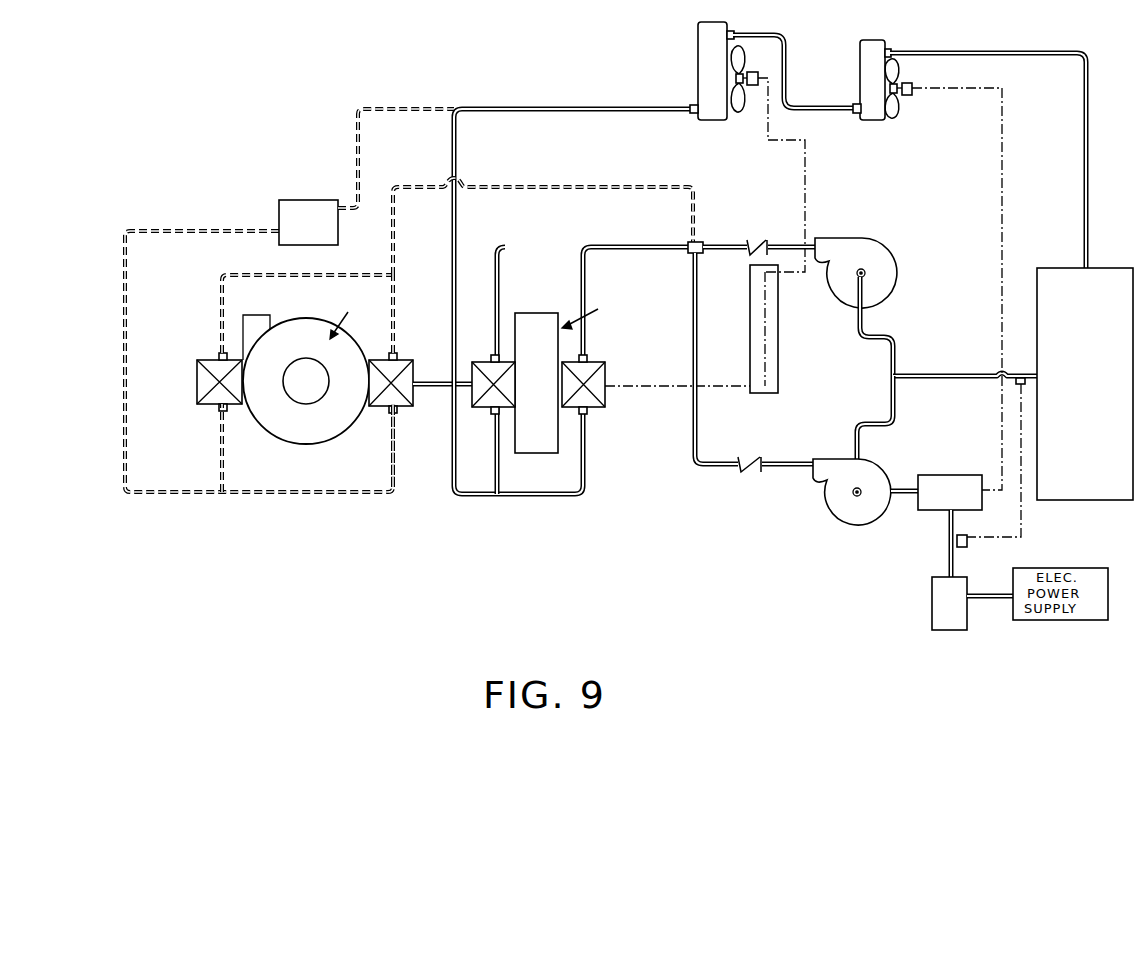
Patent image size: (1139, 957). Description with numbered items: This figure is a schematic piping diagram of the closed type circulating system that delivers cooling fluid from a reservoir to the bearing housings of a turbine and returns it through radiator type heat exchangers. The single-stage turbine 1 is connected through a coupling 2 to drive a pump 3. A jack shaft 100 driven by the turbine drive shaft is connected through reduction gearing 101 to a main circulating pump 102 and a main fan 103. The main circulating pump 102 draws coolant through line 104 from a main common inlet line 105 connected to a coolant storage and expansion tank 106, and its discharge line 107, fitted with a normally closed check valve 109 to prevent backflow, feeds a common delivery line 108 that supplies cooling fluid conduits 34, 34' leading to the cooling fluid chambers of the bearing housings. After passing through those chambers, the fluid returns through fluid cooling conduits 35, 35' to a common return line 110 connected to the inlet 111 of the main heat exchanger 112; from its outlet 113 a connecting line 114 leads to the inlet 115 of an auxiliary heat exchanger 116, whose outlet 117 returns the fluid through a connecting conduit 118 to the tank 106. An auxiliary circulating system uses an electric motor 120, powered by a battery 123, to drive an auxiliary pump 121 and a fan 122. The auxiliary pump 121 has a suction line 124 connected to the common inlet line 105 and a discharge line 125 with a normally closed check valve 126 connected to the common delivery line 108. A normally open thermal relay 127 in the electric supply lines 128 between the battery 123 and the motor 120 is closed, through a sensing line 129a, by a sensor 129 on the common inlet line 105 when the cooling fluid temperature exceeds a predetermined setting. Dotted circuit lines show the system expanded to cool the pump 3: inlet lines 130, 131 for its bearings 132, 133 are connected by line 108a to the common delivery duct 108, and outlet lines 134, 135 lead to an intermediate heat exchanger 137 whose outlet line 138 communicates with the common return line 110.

The turbine 1 is at (545, 322).
The coupling 2 is at (430, 381).
The pump 3 is at (305, 332).
The cooling fluid conduit 34 is at (594, 364).
The cooling fluid conduit 34' is at (487, 364).
The fluid cooling conduit 35 is at (595, 430).
The fluid cooling conduit 35' is at (478, 439).
The jack shaft 100 is at (648, 390).
The reduction gearing 101 is at (770, 345).
The main circulating pump 102 is at (890, 270).
The main fan 103 is at (745, 60).
The line 104 is at (896, 356).
The main common inlet line 105 is at (945, 379).
The coolant storage and expansion tank 106 is at (1103, 477).
The discharge line 107 is at (775, 236).
The common delivery line 108 is at (615, 244).
The line 108a is at (545, 186).
The check valve 109 is at (757, 240).
The common return line 110 is at (552, 105).
The inlet 111 is at (693, 104).
The main heat exchanger 112 is at (700, 42).
The outlet 113 is at (735, 32).
The connecting line 114 is at (789, 62).
The inlet 115 is at (856, 115).
The auxiliary heat exchanger 116 is at (866, 66).
The outlet 117 is at (891, 47).
The connecting conduit 118 is at (1088, 97).
The electric motor 120 is at (942, 486).
The auxiliary pump 121 is at (862, 512).
The fan 122 is at (902, 76).
The battery 123 is at (932, 606).
The suction line 124 is at (890, 401).
The discharge line 125 is at (780, 470).
The check valve 126 is at (742, 470).
The thermal relay 127 is at (966, 546).
The electric supply lines 128 is at (947, 525).
The sensor 129 is at (1005, 377).
The sensing line 129a is at (1022, 515).
The inlet line 130 is at (220, 318).
The inlet line 131 is at (396, 320).
The bearing 132 is at (396, 362).
The bearing 133 is at (200, 384).
The outlet line 134 is at (220, 444).
The outlet line 135 is at (392, 450).
The intermediate heat exchanger 137 is at (280, 212).
The outlet line 138 is at (360, 162).